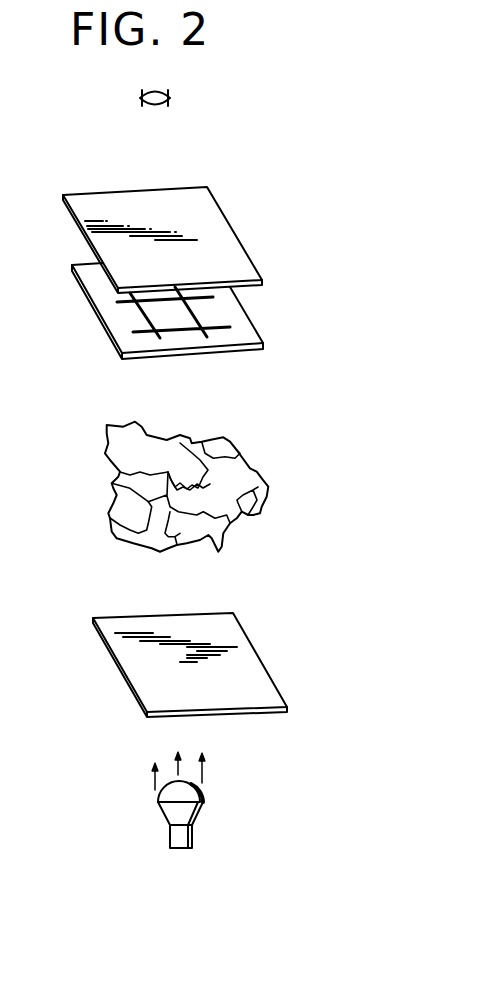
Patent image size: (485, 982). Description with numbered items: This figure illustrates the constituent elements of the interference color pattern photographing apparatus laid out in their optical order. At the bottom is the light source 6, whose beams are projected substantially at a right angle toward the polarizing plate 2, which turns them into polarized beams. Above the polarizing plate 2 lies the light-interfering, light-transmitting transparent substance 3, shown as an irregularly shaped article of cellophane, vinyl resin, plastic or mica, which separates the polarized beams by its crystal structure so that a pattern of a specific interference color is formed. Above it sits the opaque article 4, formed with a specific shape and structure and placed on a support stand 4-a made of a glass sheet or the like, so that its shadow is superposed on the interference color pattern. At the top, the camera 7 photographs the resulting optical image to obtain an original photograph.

The camera 7 is at (140, 99).
The opaque article 4 is at (242, 335).
The support stand 4-a is at (95, 288).
The transparent substance 3 is at (262, 512).
The polarizing plate 2 is at (245, 662).
The light source 6 is at (158, 802).